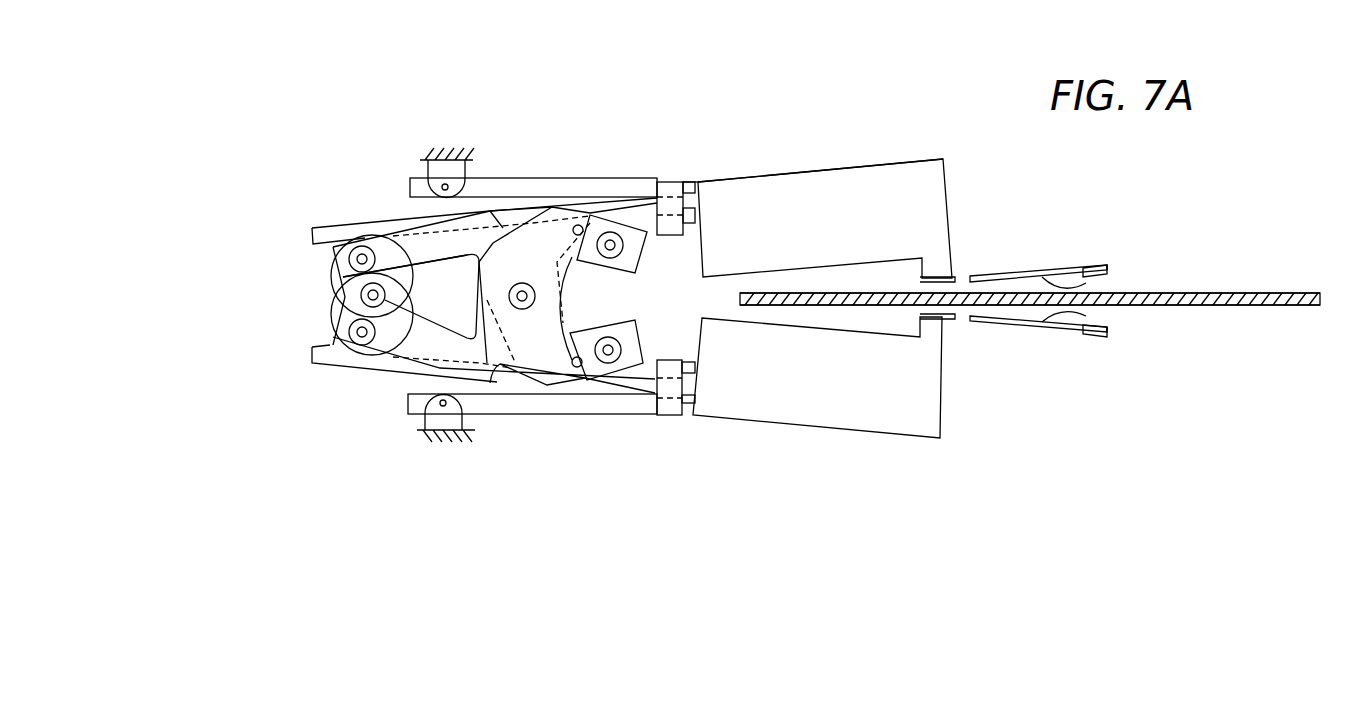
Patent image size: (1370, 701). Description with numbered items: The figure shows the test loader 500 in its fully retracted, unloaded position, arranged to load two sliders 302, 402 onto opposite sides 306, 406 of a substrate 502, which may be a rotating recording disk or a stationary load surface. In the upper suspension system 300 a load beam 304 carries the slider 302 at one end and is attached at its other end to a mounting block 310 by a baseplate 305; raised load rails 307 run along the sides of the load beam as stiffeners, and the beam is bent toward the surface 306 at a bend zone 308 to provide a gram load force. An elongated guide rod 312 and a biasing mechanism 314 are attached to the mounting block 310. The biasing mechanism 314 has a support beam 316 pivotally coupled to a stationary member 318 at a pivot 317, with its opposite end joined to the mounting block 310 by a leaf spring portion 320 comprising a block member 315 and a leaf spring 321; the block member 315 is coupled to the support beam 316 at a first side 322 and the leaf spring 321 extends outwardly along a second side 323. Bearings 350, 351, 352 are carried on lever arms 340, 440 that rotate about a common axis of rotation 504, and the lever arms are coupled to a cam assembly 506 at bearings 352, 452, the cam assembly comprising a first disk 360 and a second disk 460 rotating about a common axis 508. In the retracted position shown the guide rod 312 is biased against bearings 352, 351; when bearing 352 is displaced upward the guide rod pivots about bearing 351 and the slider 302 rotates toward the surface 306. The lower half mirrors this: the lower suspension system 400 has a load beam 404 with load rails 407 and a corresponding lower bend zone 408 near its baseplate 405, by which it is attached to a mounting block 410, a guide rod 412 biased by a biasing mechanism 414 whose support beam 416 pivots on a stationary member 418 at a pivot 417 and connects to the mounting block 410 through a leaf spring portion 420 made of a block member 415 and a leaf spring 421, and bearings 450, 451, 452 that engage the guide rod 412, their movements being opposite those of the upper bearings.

The suspension system 300 is at (1132, 198).
The slider 302 is at (1108, 268).
The load beam 304 is at (1078, 266).
The baseplate 305 is at (945, 276).
The surface 306 is at (1256, 291).
The load rails 307 is at (1086, 283).
The bend zone 308 is at (985, 277).
The mounting block 310 is at (898, 234).
The guide rod 312 is at (318, 236).
The biasing mechanism 314 is at (566, 93).
The block member 315 is at (668, 182).
The support beam 316 is at (525, 177).
The pivot 317 is at (442, 186).
The stationary member 318 is at (452, 142).
The leaf spring portion 320 is at (773, 133).
The leaf spring 321 is at (696, 218).
The first side 322 is at (655, 196).
The second side 323 is at (690, 192).
The lever arm 340 is at (435, 245).
The bearing 350 is at (618, 248).
The bearing 351 is at (570, 262).
The bearing 352 is at (350, 258).
The first disk 360 is at (362, 295).
The suspension system 400 is at (1132, 418).
The slider 402 is at (1108, 331).
The load beam 404 is at (1078, 336).
The baseplate 405 is at (945, 321).
The surface 406 is at (1284, 306).
The load rails 407 is at (1086, 316).
The lower finger 408 is at (985, 320).
The mounting block 410 is at (898, 417).
The guide rod 412 is at (318, 360).
The biasing mechanism 414 is at (566, 504).
The block member 415 is at (665, 416).
The support beam 416 is at (525, 416).
The pivot 417 is at (440, 404).
The stationary member 418 is at (448, 448).
The leaf spring portion 420 is at (763, 447).
The leaf spring 421 is at (690, 404).
The lever arm 440 is at (440, 347).
The bearing 450 is at (620, 347).
The bearing 451 is at (572, 334).
The bearing 452 is at (350, 333).
The second disk 460 is at (378, 345).
The test loader 500 is at (810, 72).
The substrate 502 is at (1320, 293).
The common axis of rotation 504 is at (509, 296).
The cam assembly 506 is at (172, 276).
The common axis of rotation 508 is at (340, 297).